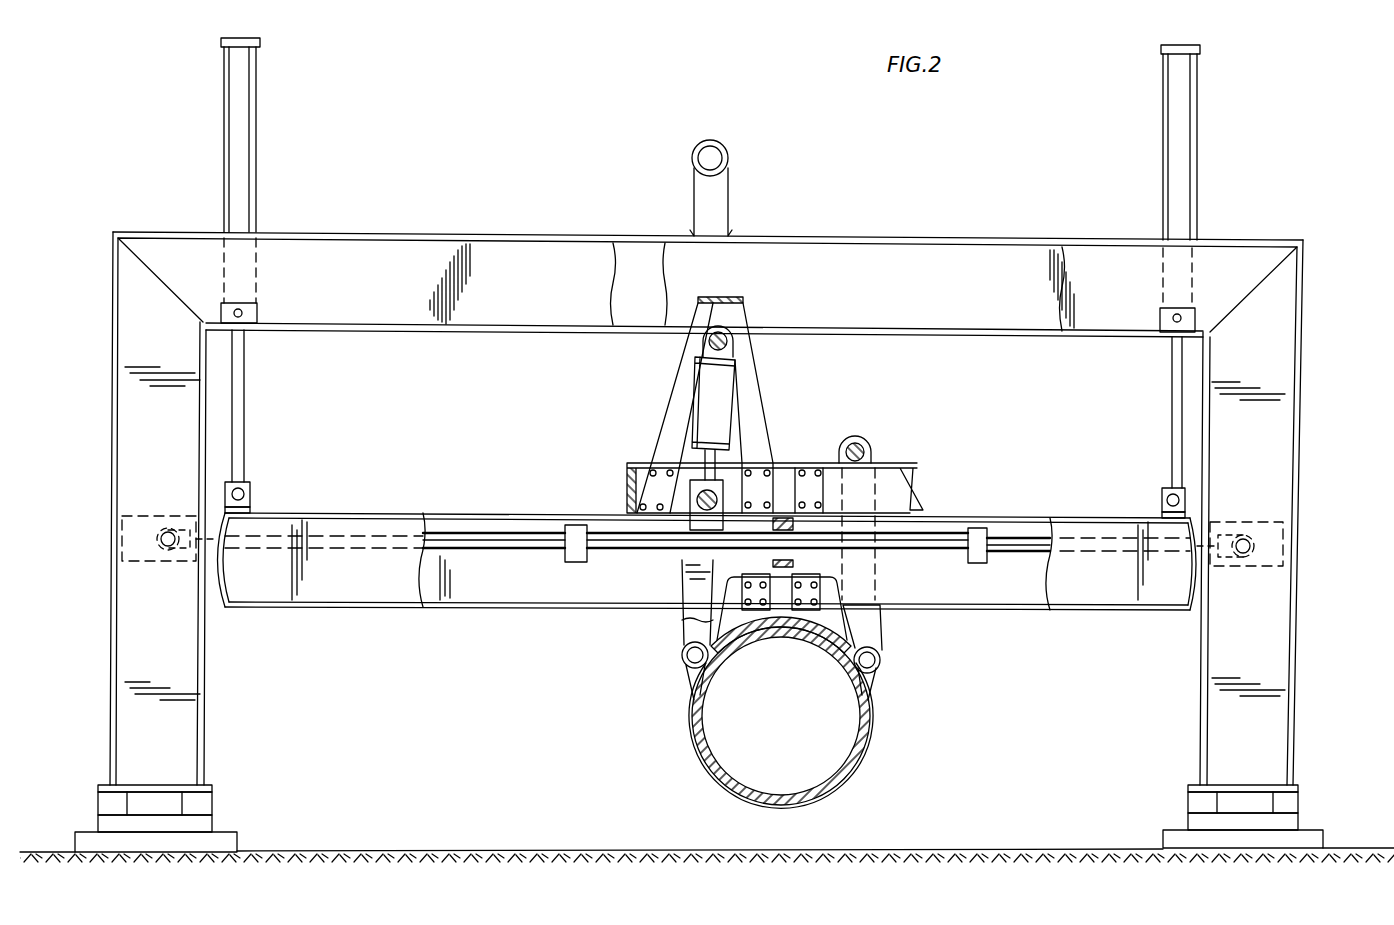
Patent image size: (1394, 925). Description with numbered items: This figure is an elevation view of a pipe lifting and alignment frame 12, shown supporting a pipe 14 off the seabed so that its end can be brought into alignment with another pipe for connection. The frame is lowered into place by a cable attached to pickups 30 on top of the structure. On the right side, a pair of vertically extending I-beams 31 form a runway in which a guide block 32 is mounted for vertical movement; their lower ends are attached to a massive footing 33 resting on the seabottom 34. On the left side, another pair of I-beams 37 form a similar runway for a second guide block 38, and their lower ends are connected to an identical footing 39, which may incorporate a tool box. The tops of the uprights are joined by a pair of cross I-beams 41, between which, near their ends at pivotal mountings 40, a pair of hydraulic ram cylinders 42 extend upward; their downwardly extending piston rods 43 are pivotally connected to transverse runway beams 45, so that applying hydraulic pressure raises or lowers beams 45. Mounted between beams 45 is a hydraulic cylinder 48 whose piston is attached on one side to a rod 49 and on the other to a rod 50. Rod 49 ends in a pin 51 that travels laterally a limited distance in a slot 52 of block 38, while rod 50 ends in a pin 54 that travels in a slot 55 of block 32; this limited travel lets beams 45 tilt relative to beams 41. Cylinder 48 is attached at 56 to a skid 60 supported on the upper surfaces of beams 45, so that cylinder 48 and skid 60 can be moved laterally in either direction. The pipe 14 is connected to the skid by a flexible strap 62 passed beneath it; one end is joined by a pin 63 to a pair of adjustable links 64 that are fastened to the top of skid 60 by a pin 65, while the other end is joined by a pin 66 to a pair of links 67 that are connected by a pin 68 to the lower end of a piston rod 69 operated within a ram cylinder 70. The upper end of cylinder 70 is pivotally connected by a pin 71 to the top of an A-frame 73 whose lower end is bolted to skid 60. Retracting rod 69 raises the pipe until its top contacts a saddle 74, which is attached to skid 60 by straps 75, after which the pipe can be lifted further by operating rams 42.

The pipe lifting and alignment frame 12 is at (368, 234).
The pipe 14 is at (860, 737).
The pickup 30 is at (722, 152).
The vertically extending I-beams 31 is at (1296, 428).
The guide block 32 is at (1282, 547).
The footing 33 is at (1318, 830).
The seabottom 34 is at (1000, 849).
The vertically extending I-beams 37 is at (206, 708).
The guide block 38 is at (122, 540).
The footing 39 is at (212, 822).
The pivotal mounting 40 is at (244, 312).
The cross I-beams 41 is at (500, 250).
The hydraulic ram cylinders 42 is at (258, 123).
The piston rods 43 is at (244, 388).
The transverse beams 45 is at (352, 513).
The hydraulic cylinder 48 is at (607, 553).
The rod 49 is at (460, 550).
The rod 50 is at (1043, 555).
The pin 51 is at (168, 548).
The slot 52 is at (168, 530).
The pin 54 is at (1243, 535).
The slot 55 is at (1243, 557).
The attachment 56 is at (775, 520).
The skid 60 is at (905, 463).
The flexible strap 62 is at (712, 778).
The pin 63 is at (878, 665).
The adjustable links 64 is at (873, 620).
The pin 65 is at (856, 440).
The pin 66 is at (688, 660).
The links 67 is at (692, 605).
The pin 68 is at (690, 495).
The piston rod 69 is at (700, 470).
The ram cylinder 70 is at (736, 375).
The pin 71 is at (725, 335).
The A-frame 73 is at (760, 420).
The saddle 74 is at (822, 653).
The straps 75 is at (803, 605).